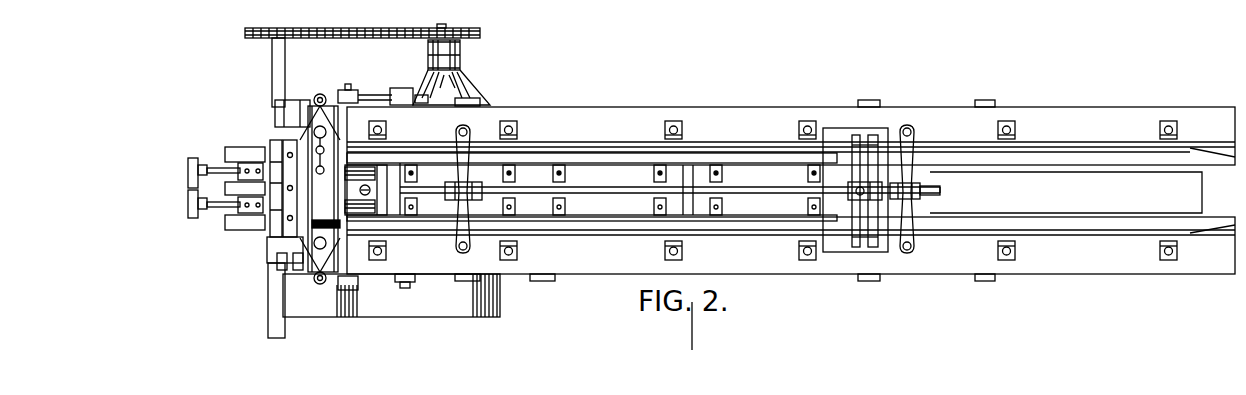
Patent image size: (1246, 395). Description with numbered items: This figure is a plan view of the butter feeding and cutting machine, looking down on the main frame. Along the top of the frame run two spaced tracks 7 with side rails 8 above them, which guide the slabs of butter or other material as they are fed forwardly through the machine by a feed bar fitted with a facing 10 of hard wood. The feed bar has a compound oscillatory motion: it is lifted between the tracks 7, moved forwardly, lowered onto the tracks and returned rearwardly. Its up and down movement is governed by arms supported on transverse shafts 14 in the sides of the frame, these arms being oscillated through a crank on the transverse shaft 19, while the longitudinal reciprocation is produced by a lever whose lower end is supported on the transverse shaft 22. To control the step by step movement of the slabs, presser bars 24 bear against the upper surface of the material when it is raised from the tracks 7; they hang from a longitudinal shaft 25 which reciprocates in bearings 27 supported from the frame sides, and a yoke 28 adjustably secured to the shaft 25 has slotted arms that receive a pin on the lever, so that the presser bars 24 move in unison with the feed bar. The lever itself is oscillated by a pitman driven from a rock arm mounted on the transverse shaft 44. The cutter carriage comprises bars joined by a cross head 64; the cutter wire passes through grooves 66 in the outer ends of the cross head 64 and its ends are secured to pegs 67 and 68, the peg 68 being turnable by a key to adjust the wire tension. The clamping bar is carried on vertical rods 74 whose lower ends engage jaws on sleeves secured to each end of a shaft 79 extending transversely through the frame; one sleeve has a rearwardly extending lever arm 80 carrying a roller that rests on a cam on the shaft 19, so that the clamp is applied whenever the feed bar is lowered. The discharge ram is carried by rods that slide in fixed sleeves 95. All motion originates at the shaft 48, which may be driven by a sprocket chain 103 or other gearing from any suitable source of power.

The tracks 7 is at (1215, 157).
The side rails 8 is at (1200, 148).
The facing 10 is at (1058, 206).
The transverse shafts 14 is at (472, 100).
The shaft 19 is at (402, 88).
The shaft 22 is at (863, 101).
The presser bars 24 is at (522, 173).
The longitudinal shaft 25 is at (776, 188).
The bearings 27 is at (452, 185).
The yoke 28 is at (855, 136).
The transverse shaft 44 is at (541, 281).
The shaft 48 is at (443, 26).
The cross head 64 is at (332, 163).
The grooves 66 is at (316, 282).
The peg 67 is at (322, 187).
The peg 68 is at (341, 224).
The vertical rods 74 is at (316, 96).
The shaft 79 is at (344, 89).
The lever arm 80 is at (369, 95).
The fixed sleeves 95 is at (193, 173).
The sprocket chain 103 is at (247, 41).